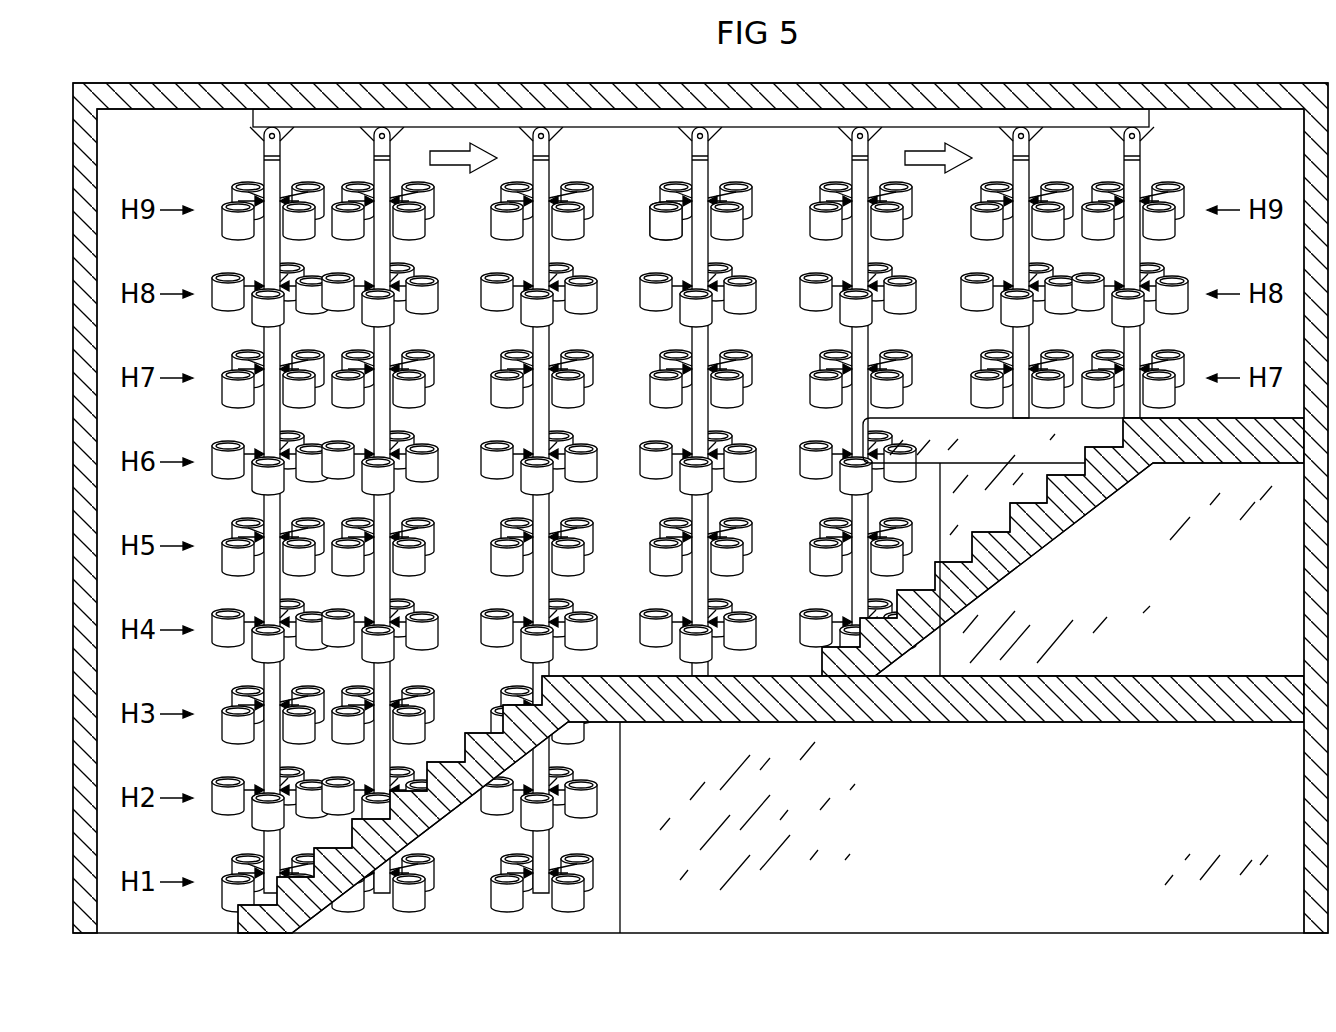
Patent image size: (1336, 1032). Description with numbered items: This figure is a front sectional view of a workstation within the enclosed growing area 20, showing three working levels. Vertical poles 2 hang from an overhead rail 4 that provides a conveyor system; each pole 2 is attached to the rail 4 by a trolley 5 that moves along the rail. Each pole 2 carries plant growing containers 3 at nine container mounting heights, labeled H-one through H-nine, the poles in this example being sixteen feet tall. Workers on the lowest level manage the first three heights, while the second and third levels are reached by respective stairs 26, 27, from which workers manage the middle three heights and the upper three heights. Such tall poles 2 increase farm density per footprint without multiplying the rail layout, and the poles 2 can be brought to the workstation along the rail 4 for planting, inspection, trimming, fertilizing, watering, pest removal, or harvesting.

The enclosed growing area 20 is at (193, 144).
The vertical pole 2 is at (711, 170).
The plant growing container 3 is at (660, 224).
The overhead rail 4 is at (792, 130).
The trolley 5 is at (686, 135).
The stairs 26 is at (459, 819).
The stairs 27 is at (1061, 540).